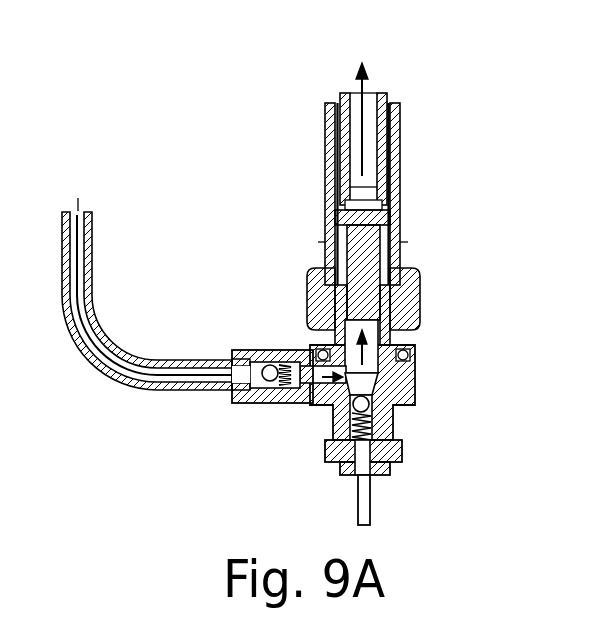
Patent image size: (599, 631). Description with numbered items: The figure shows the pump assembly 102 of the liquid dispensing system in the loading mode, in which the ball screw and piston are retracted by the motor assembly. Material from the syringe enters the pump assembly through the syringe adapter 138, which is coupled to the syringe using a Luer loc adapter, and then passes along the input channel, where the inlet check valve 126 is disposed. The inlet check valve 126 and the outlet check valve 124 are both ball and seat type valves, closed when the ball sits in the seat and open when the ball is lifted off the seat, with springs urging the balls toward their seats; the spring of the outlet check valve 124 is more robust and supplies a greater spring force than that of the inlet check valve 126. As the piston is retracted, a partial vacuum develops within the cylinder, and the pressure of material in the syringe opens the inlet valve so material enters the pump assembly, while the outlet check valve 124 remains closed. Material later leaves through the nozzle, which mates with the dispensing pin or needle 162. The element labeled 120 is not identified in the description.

The pump assembly 102 is at (354, 262).
The piston 120 is at (374, 243).
The outlet check valve 124 is at (346, 406).
The inlet check valve 126 is at (268, 386).
The syringe adapter 138 is at (148, 390).
The dispensing pin or needle 162 is at (372, 513).